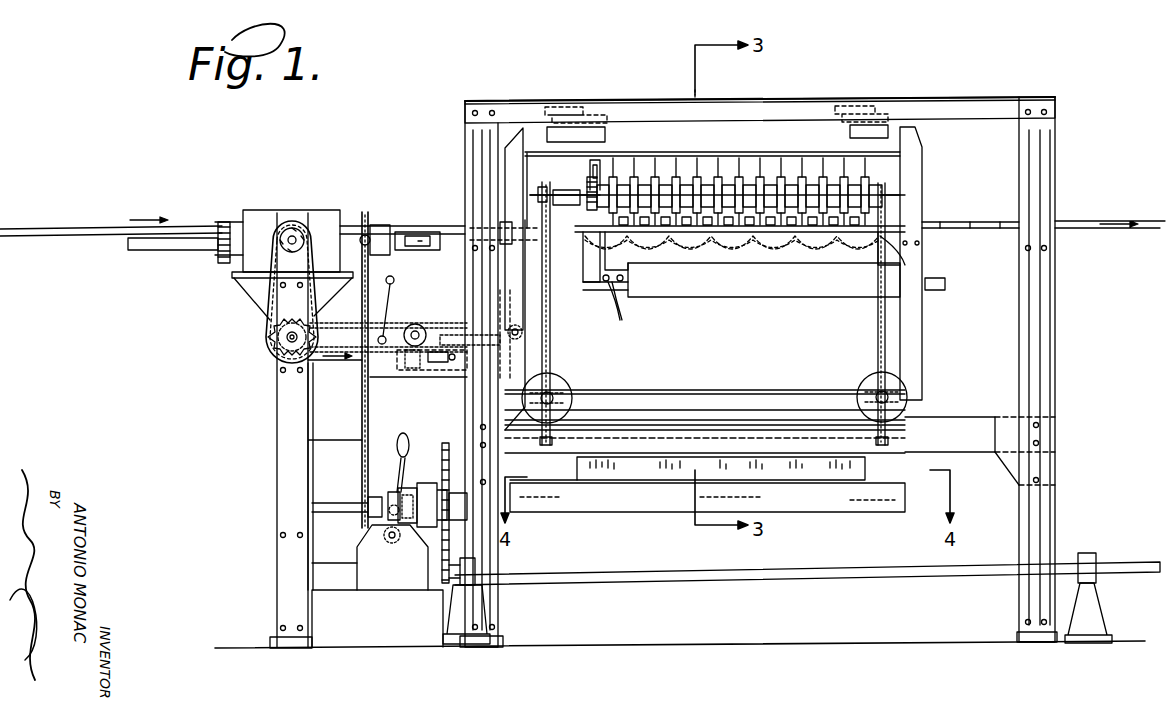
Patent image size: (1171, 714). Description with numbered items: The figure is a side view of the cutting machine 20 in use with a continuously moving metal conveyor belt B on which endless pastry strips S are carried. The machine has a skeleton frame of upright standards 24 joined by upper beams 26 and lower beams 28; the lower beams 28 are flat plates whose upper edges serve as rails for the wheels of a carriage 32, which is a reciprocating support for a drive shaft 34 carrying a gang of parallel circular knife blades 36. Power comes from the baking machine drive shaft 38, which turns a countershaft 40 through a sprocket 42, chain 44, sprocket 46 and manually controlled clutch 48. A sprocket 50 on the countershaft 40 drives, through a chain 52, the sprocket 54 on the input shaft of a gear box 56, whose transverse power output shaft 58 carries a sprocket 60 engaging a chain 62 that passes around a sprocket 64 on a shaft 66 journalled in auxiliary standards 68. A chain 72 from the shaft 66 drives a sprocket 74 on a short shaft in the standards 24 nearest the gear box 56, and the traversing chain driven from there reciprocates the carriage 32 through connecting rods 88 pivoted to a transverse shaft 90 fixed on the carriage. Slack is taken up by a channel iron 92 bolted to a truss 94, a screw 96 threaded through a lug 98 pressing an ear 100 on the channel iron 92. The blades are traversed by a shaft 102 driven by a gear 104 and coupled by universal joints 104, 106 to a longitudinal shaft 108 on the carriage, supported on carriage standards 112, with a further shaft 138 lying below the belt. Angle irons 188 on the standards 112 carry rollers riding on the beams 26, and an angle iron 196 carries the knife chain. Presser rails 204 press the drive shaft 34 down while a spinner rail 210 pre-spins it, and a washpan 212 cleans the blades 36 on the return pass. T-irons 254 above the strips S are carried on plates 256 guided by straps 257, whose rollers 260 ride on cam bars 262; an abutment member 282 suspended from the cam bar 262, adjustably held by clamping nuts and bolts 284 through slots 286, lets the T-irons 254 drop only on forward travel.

The cutting machine 20 is at (916, 48).
The upright standards 24 is at (1040, 335).
The upper beams 26 is at (988, 102).
The lower beams 28 is at (972, 428).
The carriage 32 is at (932, 312).
The drive shaft 34 is at (640, 185).
The circular knife blades 36 is at (736, 160).
The drive shaft 38 is at (1120, 565).
The countershaft 40 is at (390, 496).
The sprocket 42 is at (458, 590).
The chain 44 is at (450, 565).
The sprocket 46 is at (449, 468).
The manually controlled clutch 48 is at (414, 495).
The sprocket 50 is at (375, 500).
The chain 52 is at (364, 420).
The sprocket 54 is at (368, 228).
The gear box 56 is at (325, 215).
The power output shaft 58 is at (292, 236).
The sprocket 60 is at (272, 282).
The chain 62 is at (270, 300).
The sprocket 64 is at (280, 343).
The shaft 66 is at (288, 342).
The auxiliary standards 68 is at (290, 425).
The chain 72 is at (338, 328).
The sprocket 74 is at (491, 335).
The connecting rods 88 is at (446, 338).
The transverse shaft 90 is at (518, 325).
The channel iron 92 is at (398, 338).
The truss 94 is at (328, 375).
The screw 96 is at (477, 353).
The lug 98 is at (444, 364).
The ear 100 is at (430, 362).
The shaft 102 is at (140, 250).
The gear 104 is at (222, 256).
The universal joint 106 is at (458, 226).
The longitudinally extending shaft 108 is at (500, 228).
The carriage standards 112 is at (506, 188).
The shaft 138 is at (740, 388).
The angle irons 188 is at (708, 150).
The angle iron 196 is at (552, 348).
The presser rails 204 is at (600, 165).
The spinner rail 210 is at (590, 192).
The washpan 212 is at (810, 483).
The T-irons 254 is at (775, 240).
The plates 256 is at (722, 236).
The straps 257 is at (872, 268).
The rollers 260 is at (596, 282).
The cam bars 262 is at (790, 288).
The abutment member 282 is at (596, 290).
The clamping nuts and bolts 284 is at (622, 282).
The slots 286 is at (630, 314).
The pastry strips S is at (98, 228).
The conveyor belt B is at (1098, 228).